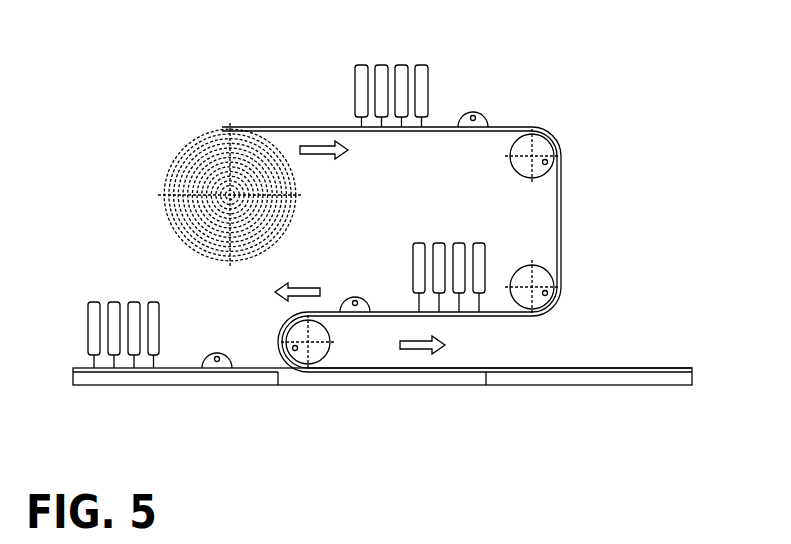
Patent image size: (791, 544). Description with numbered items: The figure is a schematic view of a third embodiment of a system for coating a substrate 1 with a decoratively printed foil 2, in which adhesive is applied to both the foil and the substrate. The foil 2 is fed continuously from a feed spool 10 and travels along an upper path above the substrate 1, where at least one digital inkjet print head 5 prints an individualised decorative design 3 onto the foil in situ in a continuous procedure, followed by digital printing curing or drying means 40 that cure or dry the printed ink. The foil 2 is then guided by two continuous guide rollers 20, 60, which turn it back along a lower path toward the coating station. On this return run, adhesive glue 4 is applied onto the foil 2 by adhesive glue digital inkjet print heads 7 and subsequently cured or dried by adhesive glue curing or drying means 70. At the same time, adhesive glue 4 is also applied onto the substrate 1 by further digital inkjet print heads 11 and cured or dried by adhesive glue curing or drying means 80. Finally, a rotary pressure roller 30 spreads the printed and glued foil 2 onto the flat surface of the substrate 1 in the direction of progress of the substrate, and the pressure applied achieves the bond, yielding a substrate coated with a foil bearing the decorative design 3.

The substrate 1 is at (570, 380).
The foil 2 is at (279, 127).
The decorative design 3 is at (505, 127).
The adhesive glue 4 is at (388, 302).
The digital inkjet print head 5 is at (380, 73).
The adhesive glue digital inkjet print heads 7 is at (418, 262).
The feed spool 10 is at (196, 165).
The digital inkjet print heads 11 is at (113, 320).
The guide roller 20 is at (504, 166).
The pressure roller 30 is at (318, 359).
The digital printing curing or drying means 40 is at (475, 99).
The guide roller 60 is at (516, 276).
The adhesive glue curing or drying means 70 is at (358, 287).
The adhesive glue curing or drying means 80 is at (215, 346).